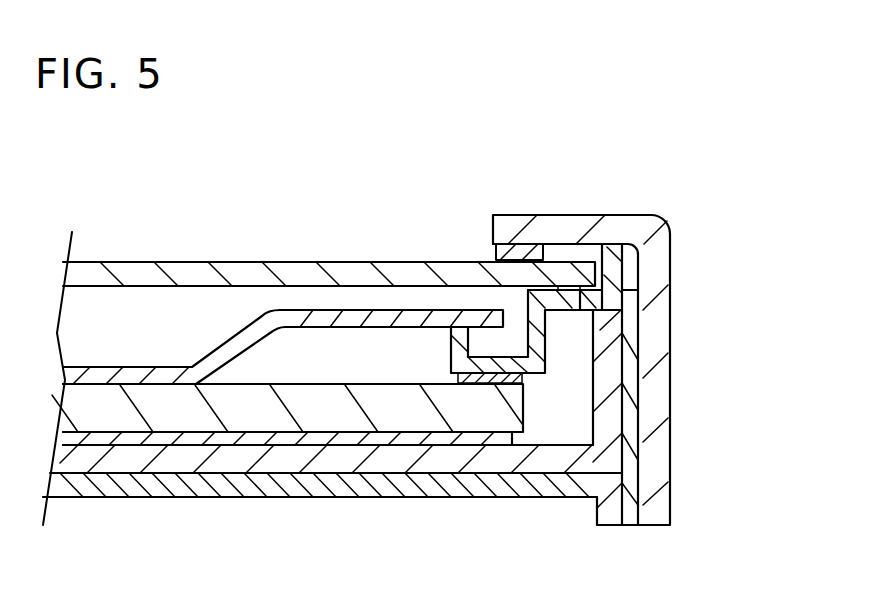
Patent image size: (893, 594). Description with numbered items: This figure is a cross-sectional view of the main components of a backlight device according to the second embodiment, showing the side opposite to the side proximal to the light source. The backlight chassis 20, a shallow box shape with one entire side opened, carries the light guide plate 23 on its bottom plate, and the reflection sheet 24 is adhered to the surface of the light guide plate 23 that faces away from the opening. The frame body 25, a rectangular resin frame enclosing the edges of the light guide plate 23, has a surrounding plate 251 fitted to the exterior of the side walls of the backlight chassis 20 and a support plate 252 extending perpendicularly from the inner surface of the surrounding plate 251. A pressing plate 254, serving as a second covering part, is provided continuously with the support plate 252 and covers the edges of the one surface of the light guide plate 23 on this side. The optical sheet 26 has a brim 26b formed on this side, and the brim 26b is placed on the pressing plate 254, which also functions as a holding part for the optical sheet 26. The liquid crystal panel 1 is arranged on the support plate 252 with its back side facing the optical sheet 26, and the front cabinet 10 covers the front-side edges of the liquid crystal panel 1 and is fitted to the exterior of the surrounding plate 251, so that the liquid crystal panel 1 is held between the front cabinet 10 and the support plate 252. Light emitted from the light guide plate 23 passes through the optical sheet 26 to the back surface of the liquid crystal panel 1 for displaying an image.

The liquid crystal panel 1 is at (354, 265).
The front cabinet 10 is at (556, 224).
The backlight chassis 20 is at (510, 465).
The light guide plate 23 is at (122, 415).
The reflection sheet 24 is at (205, 438).
The frame body 25 is at (647, 384).
The surrounding plate 251 is at (634, 326).
The support plate 252 is at (592, 298).
The pressing plate (second covering part) 254 is at (530, 352).
The optical sheet 26 is at (120, 370).
The brim 26b is at (312, 314).